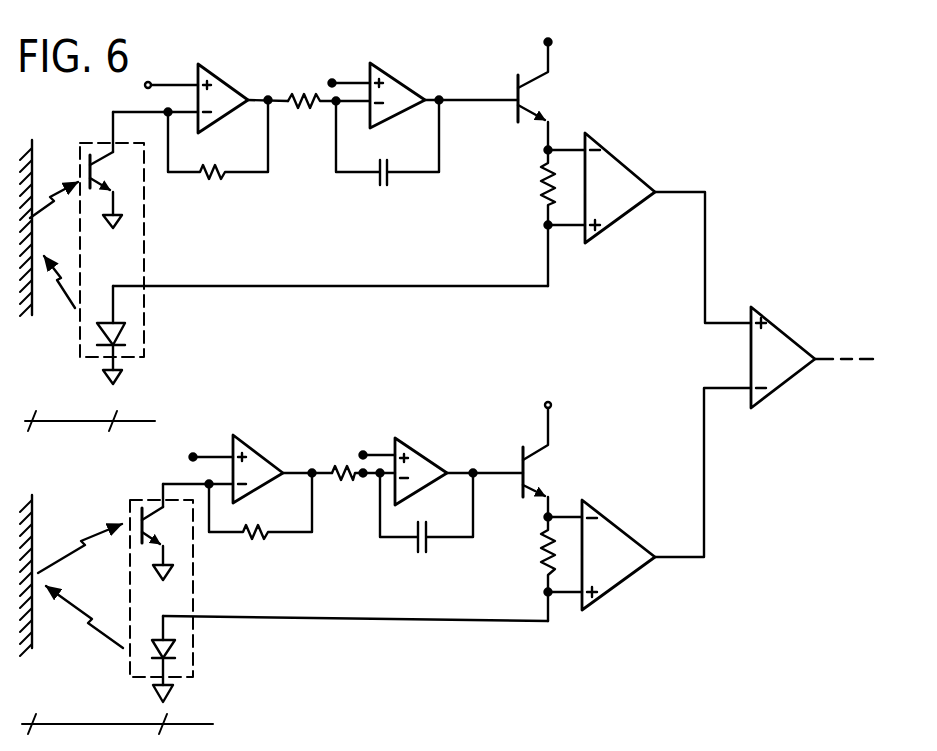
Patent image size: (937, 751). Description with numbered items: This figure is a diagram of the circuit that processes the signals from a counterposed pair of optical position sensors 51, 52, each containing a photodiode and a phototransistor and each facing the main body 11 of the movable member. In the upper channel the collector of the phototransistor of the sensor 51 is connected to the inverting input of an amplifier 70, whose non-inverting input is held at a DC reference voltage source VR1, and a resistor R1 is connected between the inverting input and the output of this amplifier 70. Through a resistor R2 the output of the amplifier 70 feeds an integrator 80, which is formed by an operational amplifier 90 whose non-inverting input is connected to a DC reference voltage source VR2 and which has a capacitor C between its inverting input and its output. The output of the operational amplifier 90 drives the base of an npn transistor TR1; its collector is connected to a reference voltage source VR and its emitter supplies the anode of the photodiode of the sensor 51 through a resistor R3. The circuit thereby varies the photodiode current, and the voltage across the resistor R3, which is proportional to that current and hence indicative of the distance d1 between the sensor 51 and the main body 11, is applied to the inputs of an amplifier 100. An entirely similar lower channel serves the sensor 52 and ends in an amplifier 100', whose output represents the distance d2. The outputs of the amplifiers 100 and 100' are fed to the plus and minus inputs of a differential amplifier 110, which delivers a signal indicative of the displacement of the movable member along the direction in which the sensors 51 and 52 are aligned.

The main body 11 is at (35, 162).
The sensor 51 is at (144, 258).
The sensor 52 is at (194, 583).
The amplifier 70 is at (230, 78).
The integrator 80 is at (398, 57).
The operational amplifier 90 is at (412, 86).
The amplifier 100 is at (668, 228).
The amplifier 100' is at (666, 499).
The differential amplifier 110 is at (773, 345).
The DC reference voltage source VR1 is at (145, 85).
The DC reference voltage source VR2 is at (363, 453).
The reference voltage source VR is at (551, 43).
The transistor TR1 is at (538, 100).
The resistor R1 is at (215, 176).
The resistor R2 is at (306, 108).
The resistor R3 is at (540, 178).
The capacitor C is at (392, 180).
The distance d1 is at (48, 418).
The distance d2 is at (92, 723).